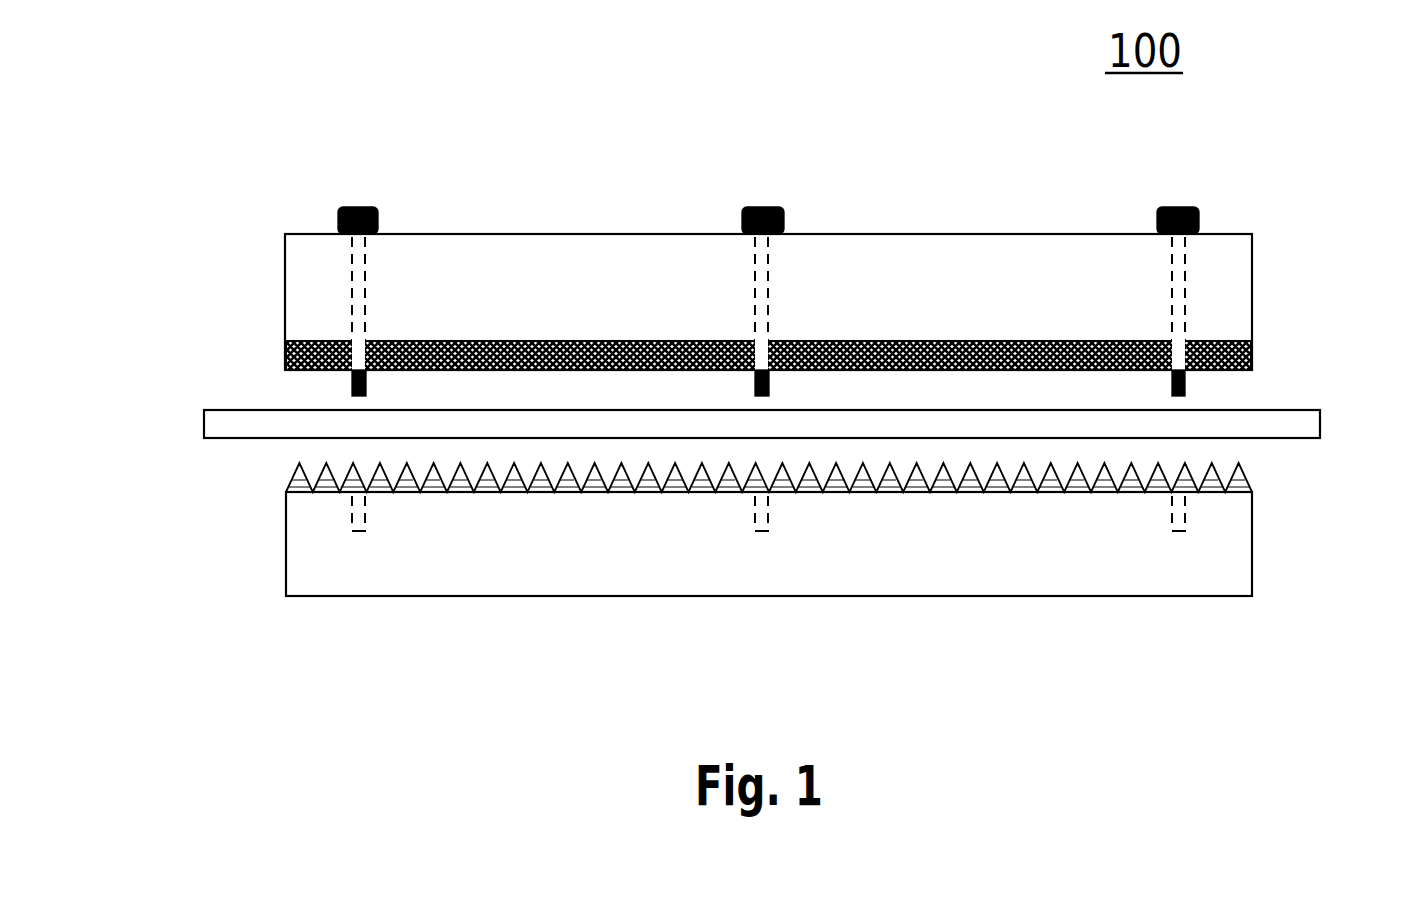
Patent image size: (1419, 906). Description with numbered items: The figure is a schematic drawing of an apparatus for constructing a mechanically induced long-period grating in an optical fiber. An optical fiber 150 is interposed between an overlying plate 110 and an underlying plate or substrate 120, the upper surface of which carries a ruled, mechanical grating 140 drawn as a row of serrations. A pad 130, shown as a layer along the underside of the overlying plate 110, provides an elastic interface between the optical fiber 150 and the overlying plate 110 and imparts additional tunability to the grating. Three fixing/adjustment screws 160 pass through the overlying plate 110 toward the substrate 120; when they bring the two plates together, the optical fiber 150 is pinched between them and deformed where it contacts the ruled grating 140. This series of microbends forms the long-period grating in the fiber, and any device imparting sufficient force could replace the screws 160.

The overlying plate 110 is at (1252, 285).
The underlying plate or substrate 120 is at (1252, 553).
The pad 130 is at (1252, 352).
The ruled mechanical grating 140 is at (285, 478).
The optical fiber 150 is at (204, 425).
The fixing/adjustment screws 160 is at (338, 222).